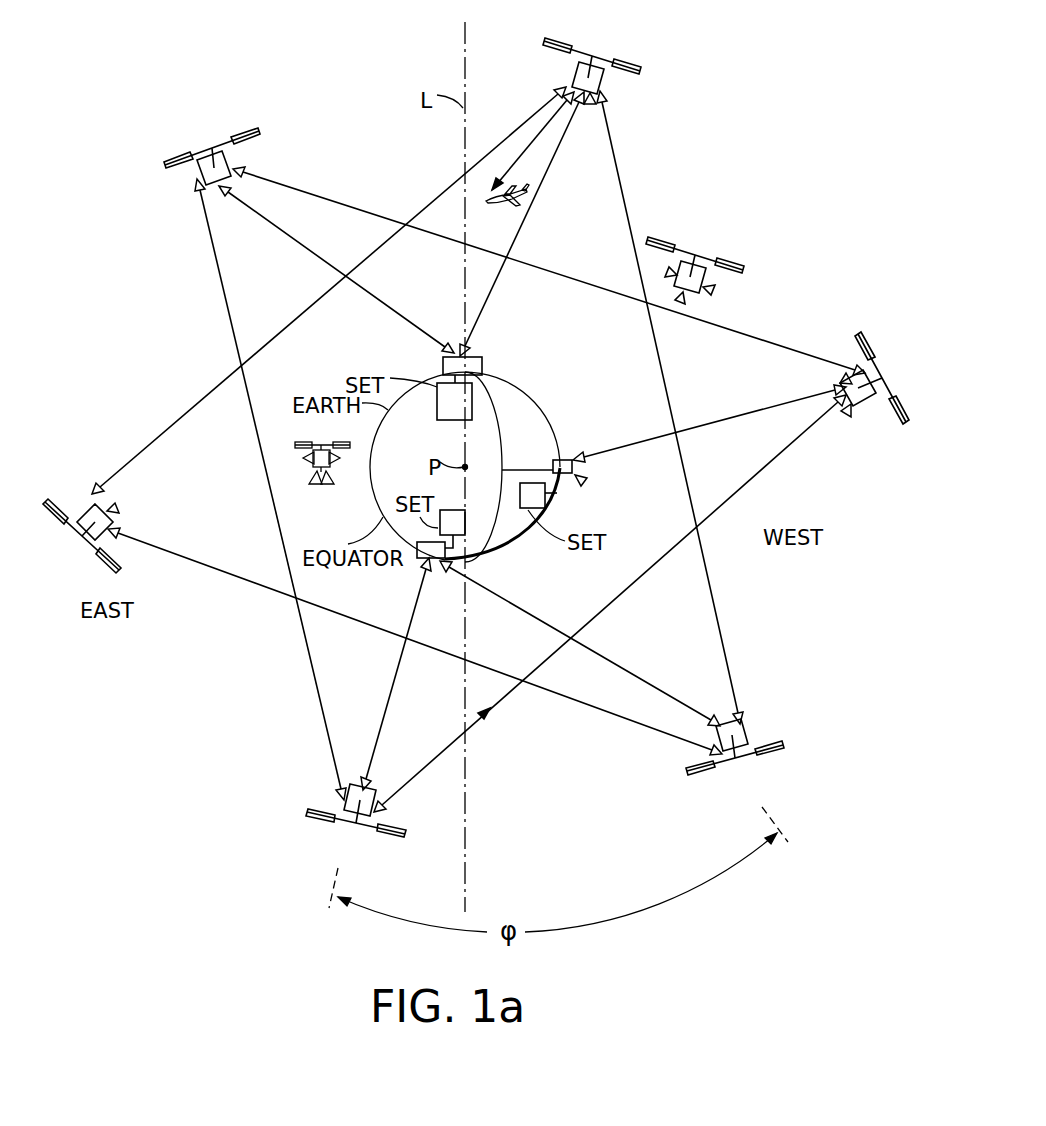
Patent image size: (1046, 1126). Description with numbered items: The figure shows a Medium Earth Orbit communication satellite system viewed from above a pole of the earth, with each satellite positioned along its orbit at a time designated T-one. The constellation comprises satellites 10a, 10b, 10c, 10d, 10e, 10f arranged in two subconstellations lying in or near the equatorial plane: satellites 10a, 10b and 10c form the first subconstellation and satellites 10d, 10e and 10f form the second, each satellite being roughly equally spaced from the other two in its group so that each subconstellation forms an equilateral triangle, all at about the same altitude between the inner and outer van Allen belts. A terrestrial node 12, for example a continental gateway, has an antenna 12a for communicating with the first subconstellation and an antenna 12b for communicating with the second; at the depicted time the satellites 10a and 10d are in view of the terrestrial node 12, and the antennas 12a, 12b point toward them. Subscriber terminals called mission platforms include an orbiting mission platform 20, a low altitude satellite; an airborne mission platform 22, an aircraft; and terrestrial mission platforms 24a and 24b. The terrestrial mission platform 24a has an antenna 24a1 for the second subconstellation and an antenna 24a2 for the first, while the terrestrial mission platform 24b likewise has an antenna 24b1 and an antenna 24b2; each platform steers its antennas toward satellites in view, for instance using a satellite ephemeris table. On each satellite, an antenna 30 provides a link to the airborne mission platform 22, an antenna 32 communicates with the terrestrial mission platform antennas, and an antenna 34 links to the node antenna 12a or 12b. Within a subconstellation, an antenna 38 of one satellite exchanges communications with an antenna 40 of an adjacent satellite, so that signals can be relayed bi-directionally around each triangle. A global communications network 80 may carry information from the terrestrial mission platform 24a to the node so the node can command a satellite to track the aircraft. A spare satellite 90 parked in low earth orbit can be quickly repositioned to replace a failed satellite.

The satellite 10a is at (209, 148).
The satellite 10b is at (882, 380).
The satellite 10c is at (356, 822).
The satellite 10d is at (588, 56).
The satellite 10e is at (735, 758).
The satellite 10f is at (80, 535).
The terrestrial node 12 is at (442, 360).
The antenna 12a is at (446, 346).
The antenna 12b is at (470, 348).
The orbiting mission platform 20 is at (322, 447).
The airborne mission platform 22 is at (499, 210).
The terrestrial mission platform 24a is at (417, 560).
The antenna 24a1 is at (452, 568).
The antenna 24a2 is at (428, 573).
The terrestrial mission platform 24b is at (563, 457).
The antenna 24b1 is at (586, 480).
The antenna 24b2 is at (586, 454).
The antenna 30 is at (562, 140).
The antenna 32 is at (836, 406).
The antenna 34 is at (226, 197).
The antenna 38 is at (245, 168).
The antenna 40 is at (196, 185).
The global communications network 80 is at (497, 400).
The spare satellite 90 is at (697, 258).